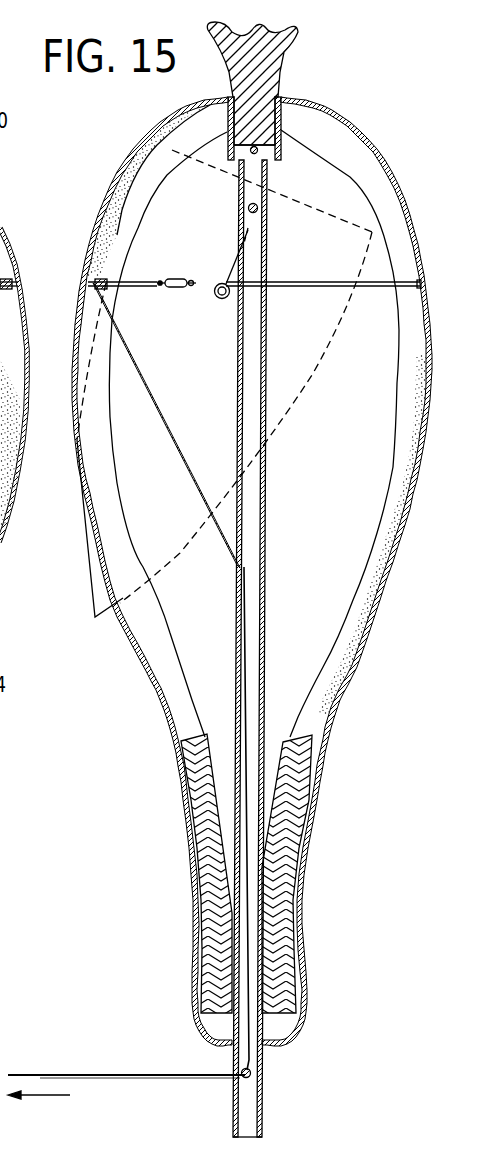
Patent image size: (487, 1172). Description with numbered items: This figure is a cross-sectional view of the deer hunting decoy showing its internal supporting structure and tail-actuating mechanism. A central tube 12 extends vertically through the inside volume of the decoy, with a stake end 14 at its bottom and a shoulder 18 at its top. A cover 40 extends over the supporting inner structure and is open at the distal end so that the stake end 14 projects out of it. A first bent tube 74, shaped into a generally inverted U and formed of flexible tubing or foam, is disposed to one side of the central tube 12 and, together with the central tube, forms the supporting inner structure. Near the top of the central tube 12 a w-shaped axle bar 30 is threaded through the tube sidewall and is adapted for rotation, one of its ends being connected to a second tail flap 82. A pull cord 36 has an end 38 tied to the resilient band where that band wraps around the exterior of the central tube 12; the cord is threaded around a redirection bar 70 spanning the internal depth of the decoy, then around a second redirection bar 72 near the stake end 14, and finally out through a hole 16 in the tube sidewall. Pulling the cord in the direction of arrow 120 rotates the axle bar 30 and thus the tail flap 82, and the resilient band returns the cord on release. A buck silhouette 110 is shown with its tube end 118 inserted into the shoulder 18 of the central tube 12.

The central tube 12 is at (267, 177).
The stake end 14 is at (262, 1117).
The hole 16 is at (230, 1080).
The shoulder 18 is at (280, 120).
The w-shaped axle bar 30 is at (267, 215).
The pull cord 36 is at (50, 1073).
The end of the pull cord 38 is at (175, 272).
The cover 40 is at (413, 513).
The redirection bar 70 is at (110, 281).
The second redirection bar 72 is at (257, 1072).
The first bent tube 74 is at (337, 667).
The second tail flap 82 is at (97, 582).
The buck silhouette 110 is at (270, 42).
The tube end 118 is at (252, 108).
The arrow 120 is at (45, 1097).